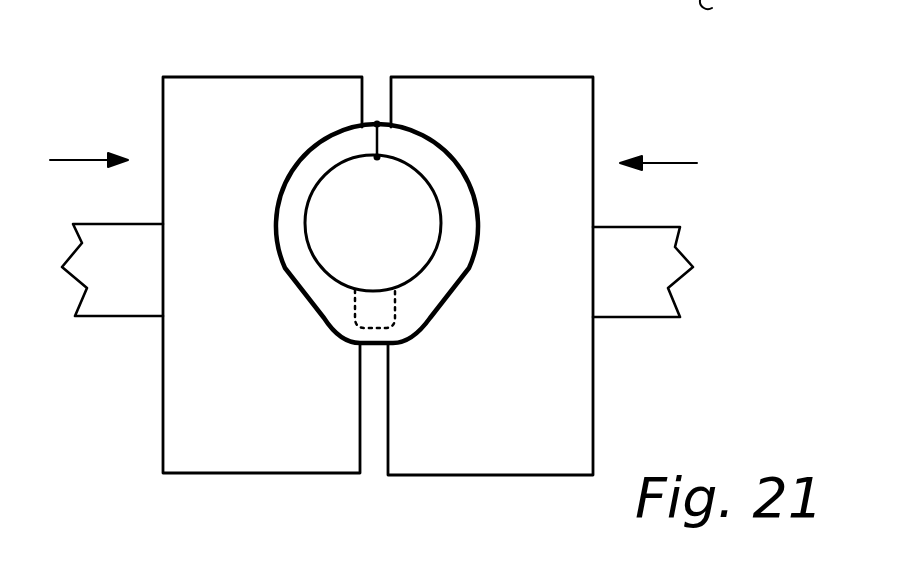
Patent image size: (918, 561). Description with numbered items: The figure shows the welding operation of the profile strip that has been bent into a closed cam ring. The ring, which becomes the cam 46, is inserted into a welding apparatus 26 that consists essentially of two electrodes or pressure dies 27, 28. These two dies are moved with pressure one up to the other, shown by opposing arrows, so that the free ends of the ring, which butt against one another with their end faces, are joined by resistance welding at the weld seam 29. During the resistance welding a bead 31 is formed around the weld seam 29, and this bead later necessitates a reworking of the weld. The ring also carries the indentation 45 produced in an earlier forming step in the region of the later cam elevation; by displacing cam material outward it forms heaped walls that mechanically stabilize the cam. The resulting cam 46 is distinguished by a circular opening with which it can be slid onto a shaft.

The welding apparatus 26 is at (610, 408).
The electrode or pressure die 27 is at (183, 117).
The electrode or pressure die 28 is at (563, 125).
The weld seam 29 is at (375, 142).
The bead 31 is at (377, 122).
The indentation 45 is at (370, 313).
The cam 46 is at (320, 157).